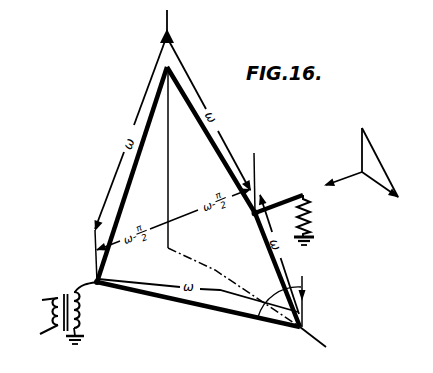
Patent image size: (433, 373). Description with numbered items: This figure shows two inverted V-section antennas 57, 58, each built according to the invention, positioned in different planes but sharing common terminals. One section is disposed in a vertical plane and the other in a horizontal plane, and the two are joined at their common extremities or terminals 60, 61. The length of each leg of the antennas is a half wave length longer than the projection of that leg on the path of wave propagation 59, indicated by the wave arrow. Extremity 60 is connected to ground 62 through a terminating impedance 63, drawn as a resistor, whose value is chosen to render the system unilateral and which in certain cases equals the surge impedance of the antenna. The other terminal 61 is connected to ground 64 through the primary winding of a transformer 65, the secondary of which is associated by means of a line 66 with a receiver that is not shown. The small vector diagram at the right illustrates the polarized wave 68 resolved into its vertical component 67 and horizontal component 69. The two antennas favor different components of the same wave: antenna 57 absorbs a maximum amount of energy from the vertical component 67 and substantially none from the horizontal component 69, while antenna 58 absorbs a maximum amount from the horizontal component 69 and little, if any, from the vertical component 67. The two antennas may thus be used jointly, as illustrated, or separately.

The inverted V-section 57 is at (160, 96).
The inverted V-section 58 is at (260, 317).
The path of wave propagation 59 is at (338, 178).
The common extremity or terminal 60 is at (252, 215).
The common extremity or terminal 61 is at (99, 279).
The ground 62 is at (314, 235).
The terminating impedance 63 is at (312, 212).
The ground 64 is at (79, 329).
The transformer 65 is at (69, 292).
The line 66 is at (43, 316).
The vertical component 67 is at (361, 146).
The polarized wave 68 is at (375, 144).
The horizontal component 69 is at (377, 183).